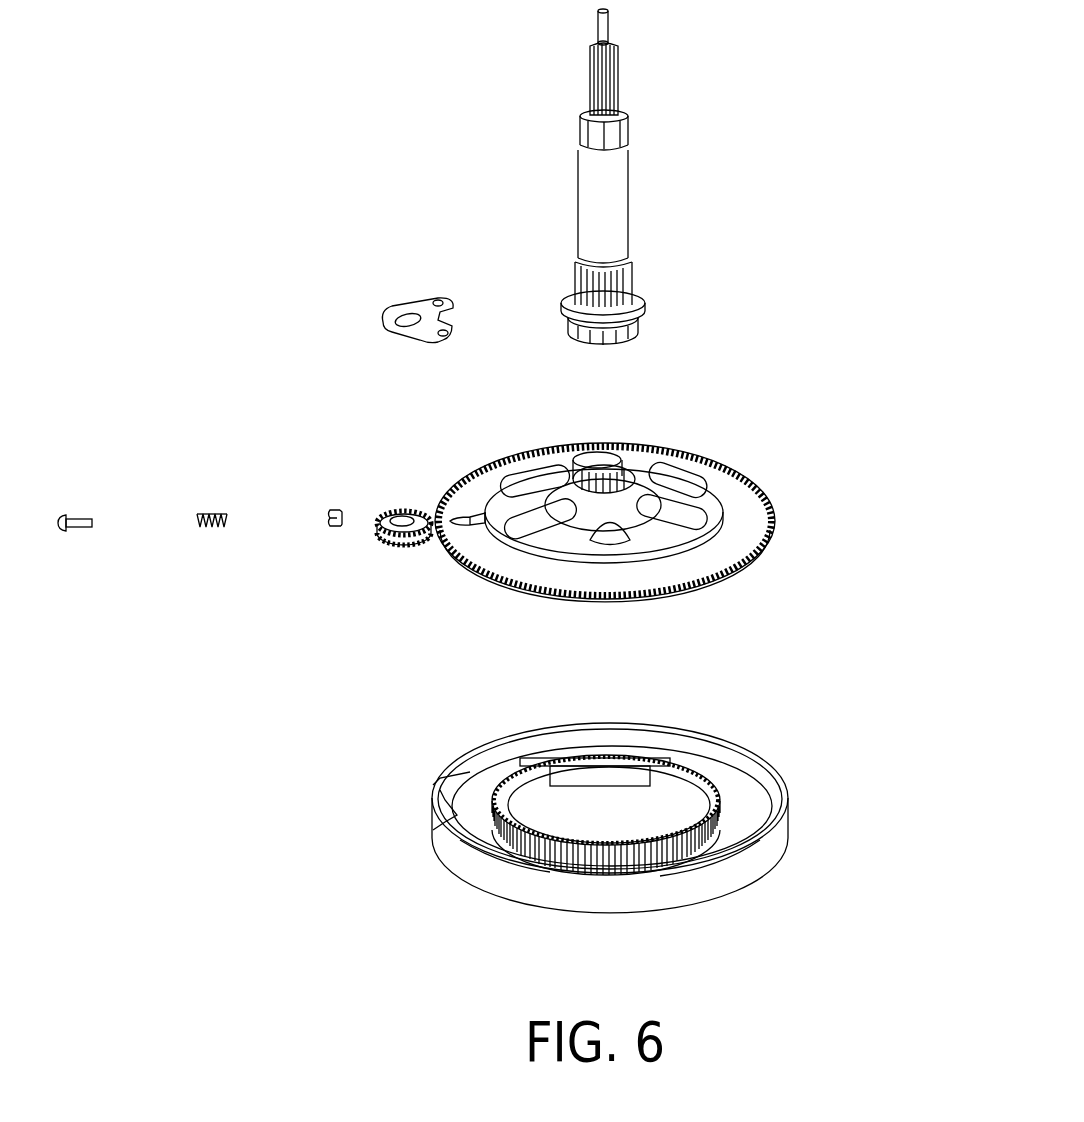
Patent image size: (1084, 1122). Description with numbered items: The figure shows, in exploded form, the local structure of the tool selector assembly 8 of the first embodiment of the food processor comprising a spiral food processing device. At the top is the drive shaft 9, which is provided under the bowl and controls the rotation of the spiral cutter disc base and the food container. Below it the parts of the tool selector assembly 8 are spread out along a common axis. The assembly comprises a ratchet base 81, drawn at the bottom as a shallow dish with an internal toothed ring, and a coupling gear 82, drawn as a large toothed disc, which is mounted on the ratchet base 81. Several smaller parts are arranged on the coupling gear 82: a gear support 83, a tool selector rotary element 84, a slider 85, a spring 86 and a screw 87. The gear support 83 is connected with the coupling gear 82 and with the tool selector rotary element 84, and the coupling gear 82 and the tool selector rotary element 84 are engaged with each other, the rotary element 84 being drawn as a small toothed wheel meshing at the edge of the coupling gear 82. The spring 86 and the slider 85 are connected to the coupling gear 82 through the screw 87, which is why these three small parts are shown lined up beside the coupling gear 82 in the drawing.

The tool selector assembly 8 is at (395, 722).
The drive shaft 9 is at (632, 205).
The ratchet base 81 is at (782, 842).
The coupling gear 82 is at (776, 523).
The gear support 83 is at (388, 338).
The tool selector rotary element 84 is at (412, 545).
The slider 85 is at (333, 530).
The spring 86 is at (213, 530).
The screw 87 is at (85, 530).